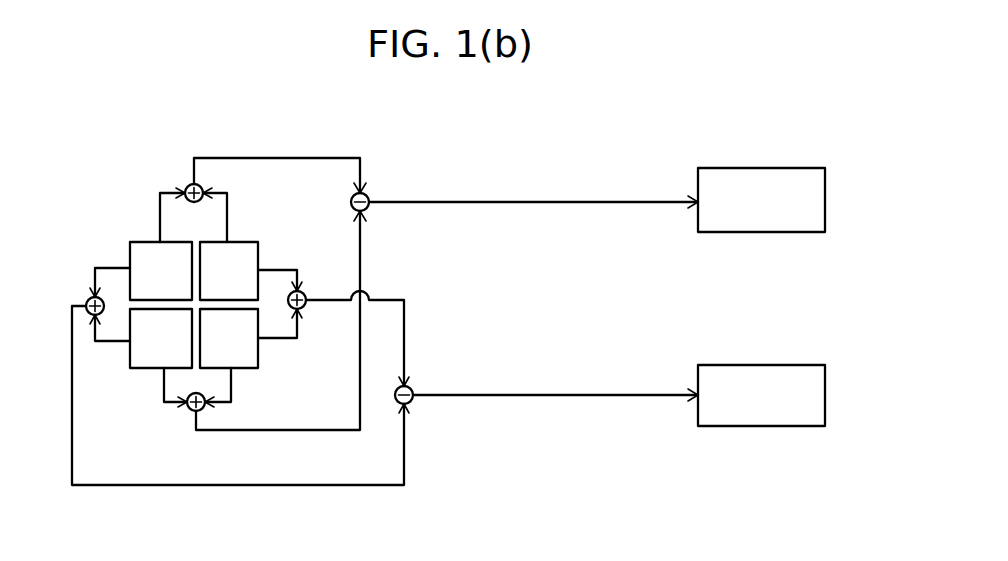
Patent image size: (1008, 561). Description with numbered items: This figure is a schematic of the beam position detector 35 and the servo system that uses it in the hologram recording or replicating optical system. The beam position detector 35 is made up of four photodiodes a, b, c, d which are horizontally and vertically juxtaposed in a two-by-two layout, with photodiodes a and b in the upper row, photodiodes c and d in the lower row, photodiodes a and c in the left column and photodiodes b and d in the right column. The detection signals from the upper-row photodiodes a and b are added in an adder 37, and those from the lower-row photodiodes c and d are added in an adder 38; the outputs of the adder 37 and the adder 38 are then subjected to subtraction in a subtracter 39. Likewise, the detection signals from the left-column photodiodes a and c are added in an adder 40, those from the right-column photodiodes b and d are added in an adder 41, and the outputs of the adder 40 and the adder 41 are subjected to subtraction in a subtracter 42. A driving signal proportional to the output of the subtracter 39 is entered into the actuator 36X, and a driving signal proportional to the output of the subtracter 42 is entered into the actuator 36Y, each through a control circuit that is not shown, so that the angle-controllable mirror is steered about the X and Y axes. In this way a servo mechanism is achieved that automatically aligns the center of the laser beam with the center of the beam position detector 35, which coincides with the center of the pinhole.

The beam position detector 35 is at (270, 212).
The actuator 36X is at (767, 232).
The actuator 36Y is at (771, 426).
The adder 37 is at (190, 186).
The adder 38 is at (190, 410).
The subtracter 39 is at (368, 195).
The adder 40 is at (89, 298).
The adder 41 is at (304, 307).
The subtracter 42 is at (412, 401).
The photodiode a is at (147, 247).
The photodiode b is at (258, 243).
The photodiode c is at (142, 360).
The photodiode d is at (256, 356).